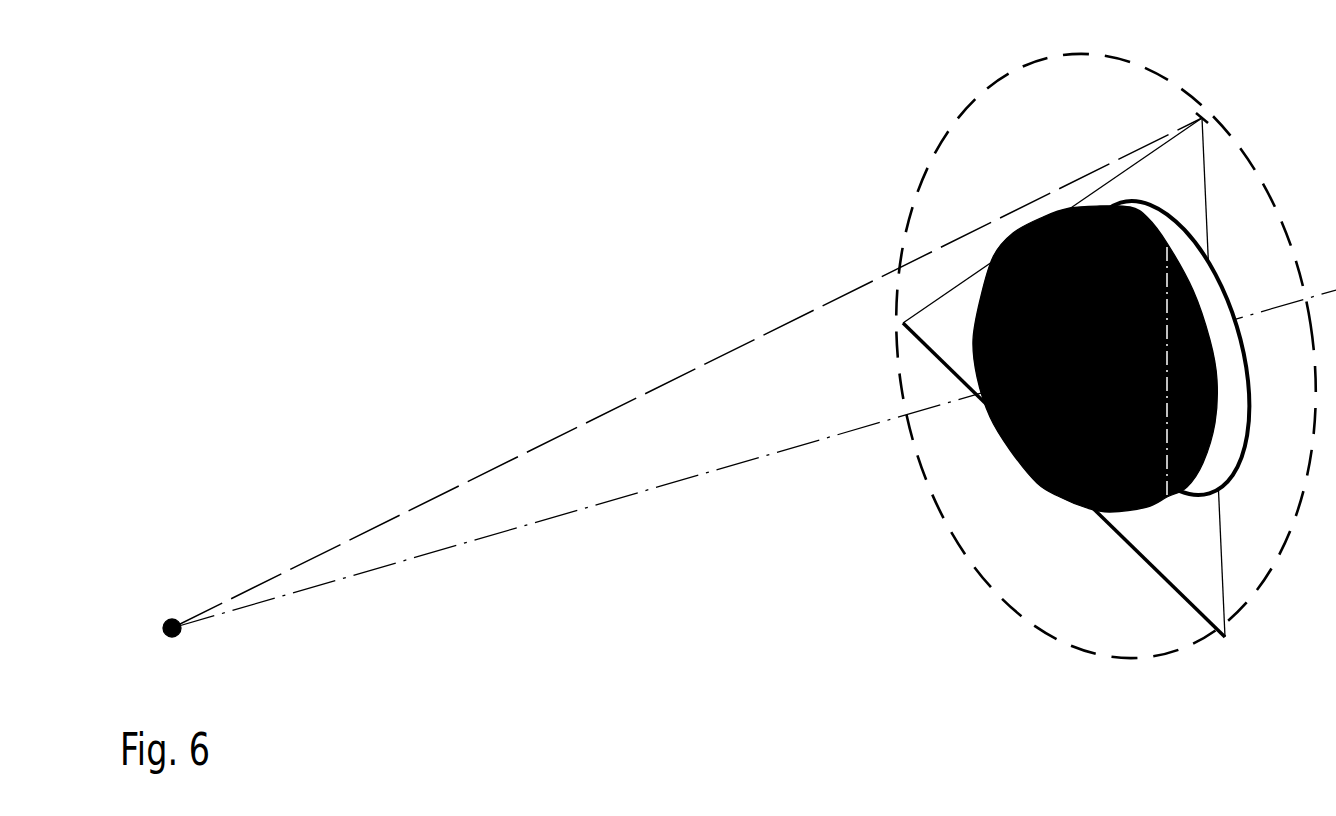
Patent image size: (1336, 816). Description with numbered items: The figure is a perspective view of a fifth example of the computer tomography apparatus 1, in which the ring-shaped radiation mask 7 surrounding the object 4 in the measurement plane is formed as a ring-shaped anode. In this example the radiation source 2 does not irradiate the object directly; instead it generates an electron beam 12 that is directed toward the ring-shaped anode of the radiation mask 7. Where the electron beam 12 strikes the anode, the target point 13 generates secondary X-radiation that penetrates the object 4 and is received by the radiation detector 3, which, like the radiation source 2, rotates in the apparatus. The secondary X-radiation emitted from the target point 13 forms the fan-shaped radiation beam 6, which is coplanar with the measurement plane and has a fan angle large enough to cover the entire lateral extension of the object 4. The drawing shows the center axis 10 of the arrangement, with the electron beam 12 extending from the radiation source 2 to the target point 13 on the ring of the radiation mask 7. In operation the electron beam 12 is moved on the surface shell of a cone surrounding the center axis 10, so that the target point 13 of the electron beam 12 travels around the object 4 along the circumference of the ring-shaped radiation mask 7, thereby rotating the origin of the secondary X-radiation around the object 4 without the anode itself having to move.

The computer tomography apparatus 1 is at (442, 234).
The radiation source 2 is at (184, 636).
The radiation detector 3 is at (1147, 567).
The object 4 is at (1017, 467).
The radiation beam 6 is at (1200, 523).
The radiation mask 7 is at (1007, 575).
The center axis 10 is at (494, 535).
The electron beam 12 is at (512, 460).
The target point 13 is at (1205, 118).